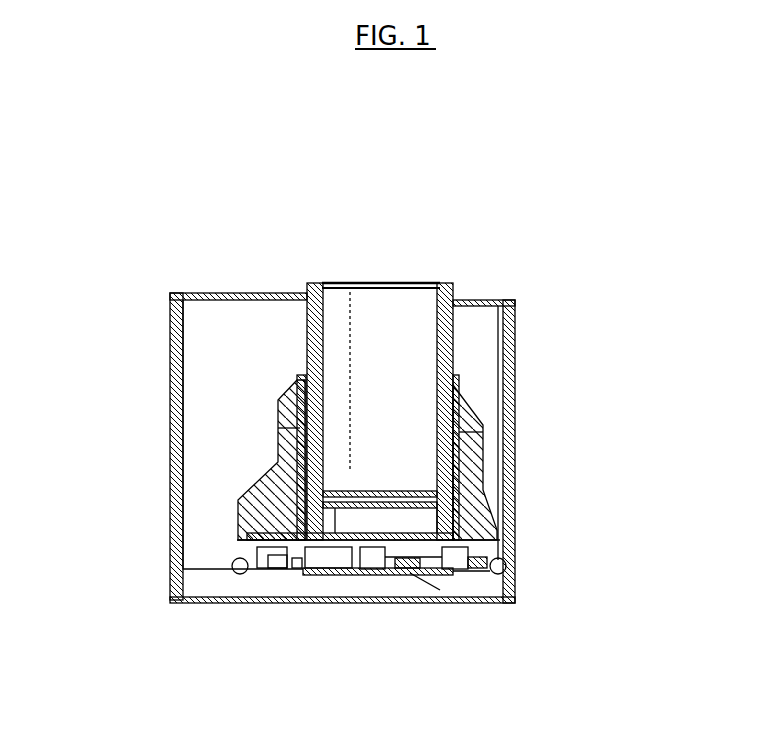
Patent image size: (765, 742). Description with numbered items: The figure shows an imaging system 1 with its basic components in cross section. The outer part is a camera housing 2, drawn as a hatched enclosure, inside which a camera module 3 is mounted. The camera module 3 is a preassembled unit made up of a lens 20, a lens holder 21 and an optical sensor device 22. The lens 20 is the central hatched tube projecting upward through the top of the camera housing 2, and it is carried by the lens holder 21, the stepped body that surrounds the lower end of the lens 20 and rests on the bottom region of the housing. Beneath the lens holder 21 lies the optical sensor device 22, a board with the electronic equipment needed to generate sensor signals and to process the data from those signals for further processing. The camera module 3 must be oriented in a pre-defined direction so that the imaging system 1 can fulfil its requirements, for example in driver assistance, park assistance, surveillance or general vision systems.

The imaging system 1 is at (118, 178).
The camera housing 2 is at (210, 590).
The camera module 3 is at (438, 258).
The lens 20 is at (410, 330).
The lens holder 21 is at (470, 425).
The optical sensor device 22 is at (420, 572).